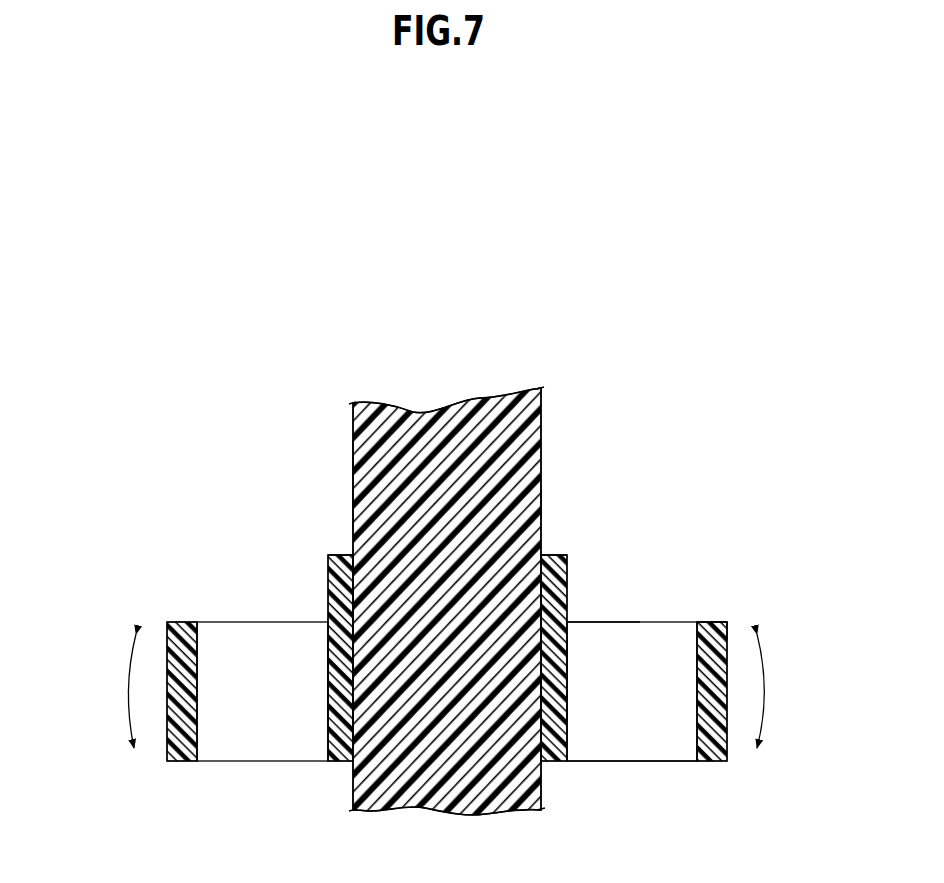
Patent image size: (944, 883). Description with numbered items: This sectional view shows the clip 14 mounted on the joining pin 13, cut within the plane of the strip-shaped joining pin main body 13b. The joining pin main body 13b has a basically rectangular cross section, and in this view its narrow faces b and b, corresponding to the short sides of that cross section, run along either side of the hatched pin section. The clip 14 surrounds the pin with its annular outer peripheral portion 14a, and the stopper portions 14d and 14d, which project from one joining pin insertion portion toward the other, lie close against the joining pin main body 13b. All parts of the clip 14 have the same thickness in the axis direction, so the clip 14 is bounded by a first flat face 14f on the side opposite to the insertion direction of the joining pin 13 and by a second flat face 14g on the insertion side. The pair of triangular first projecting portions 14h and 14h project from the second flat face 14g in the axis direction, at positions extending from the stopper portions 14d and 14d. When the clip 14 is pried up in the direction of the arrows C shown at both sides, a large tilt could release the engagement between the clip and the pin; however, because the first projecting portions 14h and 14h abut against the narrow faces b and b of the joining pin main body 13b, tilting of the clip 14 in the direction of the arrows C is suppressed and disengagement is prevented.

The joining pin 13 is at (545, 417).
The joining pin main body 13b is at (370, 475).
The narrow face b is at (353, 515).
The clip 14 is at (678, 598).
The outer peripheral portion 14a is at (708, 624).
The stopper portion 14d is at (333, 699).
The first flat face 14f is at (645, 763).
The second flat face 14g is at (602, 621).
The first projecting portion 14h is at (336, 582).
The direction of arrows C-C" C is at (442, 696).